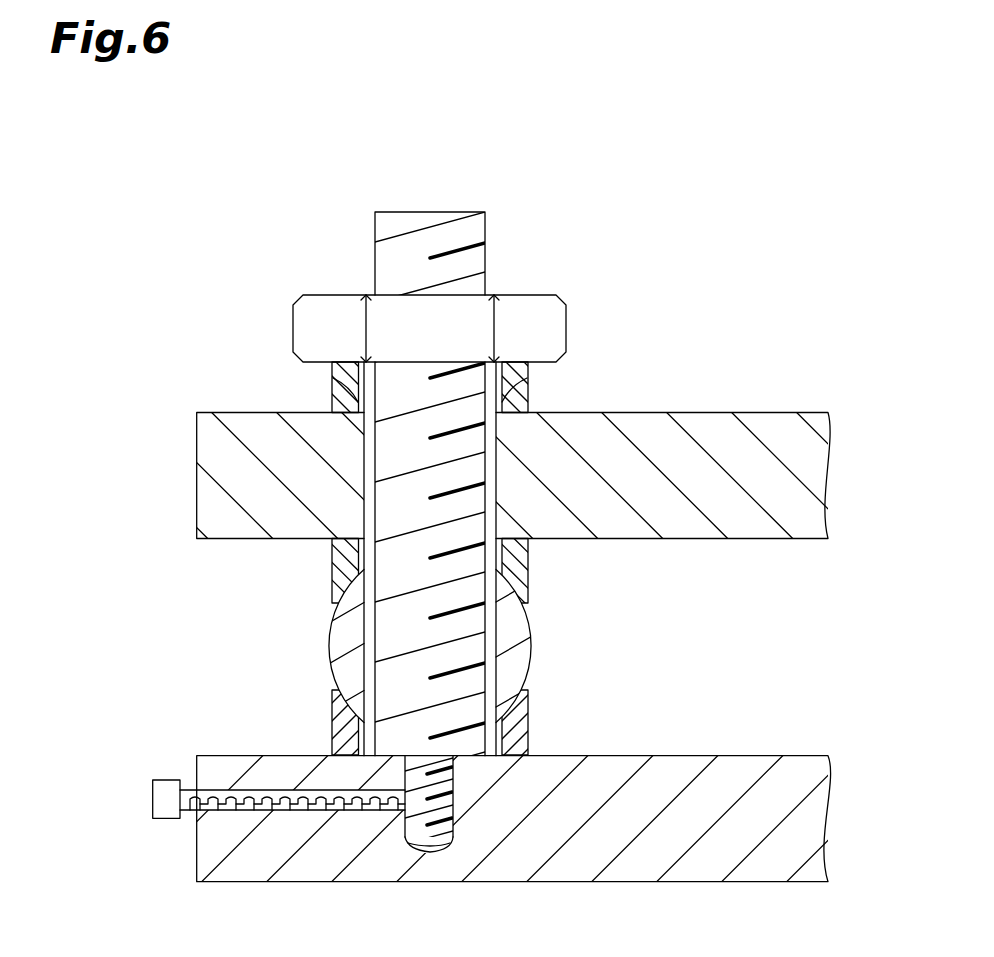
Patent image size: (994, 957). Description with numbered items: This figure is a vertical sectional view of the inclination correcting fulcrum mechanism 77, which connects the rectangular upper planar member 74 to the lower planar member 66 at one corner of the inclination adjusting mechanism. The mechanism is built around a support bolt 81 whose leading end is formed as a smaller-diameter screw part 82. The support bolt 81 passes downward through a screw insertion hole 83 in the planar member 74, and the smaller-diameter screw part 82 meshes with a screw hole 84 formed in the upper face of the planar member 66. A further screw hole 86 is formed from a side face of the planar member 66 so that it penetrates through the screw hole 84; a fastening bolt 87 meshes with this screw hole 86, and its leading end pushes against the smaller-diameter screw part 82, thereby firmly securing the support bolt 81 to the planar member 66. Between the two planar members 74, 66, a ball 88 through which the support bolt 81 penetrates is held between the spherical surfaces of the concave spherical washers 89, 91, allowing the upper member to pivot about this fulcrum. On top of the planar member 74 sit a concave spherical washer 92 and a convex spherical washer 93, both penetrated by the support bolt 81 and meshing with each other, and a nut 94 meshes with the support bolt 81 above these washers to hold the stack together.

The planar member 66 is at (687, 755).
The planar member 74 is at (687, 425).
The inclination correcting fulcrum mechanism 77 is at (695, 232).
The support bolt 81 is at (405, 211).
The smaller-diameter screw part 82 is at (405, 812).
The screw insertion hole 83 is at (497, 433).
The screw hole 84 is at (440, 850).
The screw hole 86 is at (257, 793).
The fastening bolt 87 is at (153, 800).
The ball 88 is at (522, 647).
The spherical washer 89 is at (522, 557).
The spherical washer 91 is at (518, 717).
The concave spherical washer 92 is at (333, 403).
The convex spherical washer 93 is at (333, 375).
The nut 94 is at (303, 317).